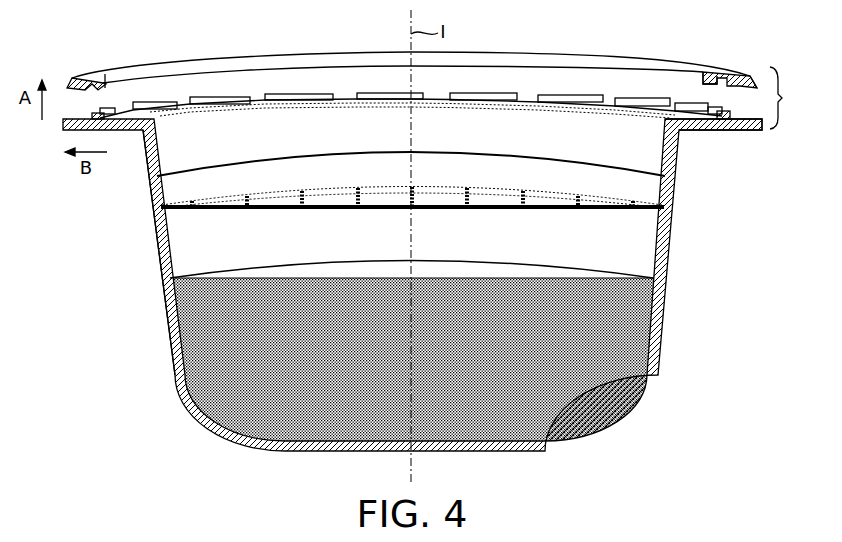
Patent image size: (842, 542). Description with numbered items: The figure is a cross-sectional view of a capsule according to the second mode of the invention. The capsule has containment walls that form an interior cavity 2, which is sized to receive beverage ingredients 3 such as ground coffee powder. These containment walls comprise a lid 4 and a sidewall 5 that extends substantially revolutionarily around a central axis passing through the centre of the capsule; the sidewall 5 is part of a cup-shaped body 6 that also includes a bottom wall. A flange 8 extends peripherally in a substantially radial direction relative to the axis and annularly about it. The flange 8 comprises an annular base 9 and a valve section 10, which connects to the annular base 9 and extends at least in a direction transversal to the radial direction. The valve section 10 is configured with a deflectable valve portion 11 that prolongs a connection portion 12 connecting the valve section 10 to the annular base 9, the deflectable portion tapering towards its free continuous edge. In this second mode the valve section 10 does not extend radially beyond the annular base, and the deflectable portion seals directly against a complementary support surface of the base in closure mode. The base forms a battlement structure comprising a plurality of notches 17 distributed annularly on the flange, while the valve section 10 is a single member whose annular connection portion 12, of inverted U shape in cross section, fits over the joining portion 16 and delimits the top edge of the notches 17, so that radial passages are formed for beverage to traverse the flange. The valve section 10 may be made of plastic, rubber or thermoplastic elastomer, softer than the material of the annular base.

The interior cavity 2 is at (636, 247).
The beverage ingredients 3 is at (640, 334).
The lid 4 is at (599, 205).
The sidewall 5 is at (156, 237).
The cup-shaped body 6 is at (770, 132).
The flange 8 is at (783, 98).
The annular base 9 is at (700, 132).
The valve section 10 is at (718, 68).
The deflectable valve portion 11 is at (740, 72).
The connection portion 12 is at (704, 80).
The joining portion 16 is at (195, 92).
The notches 17 is at (530, 98).